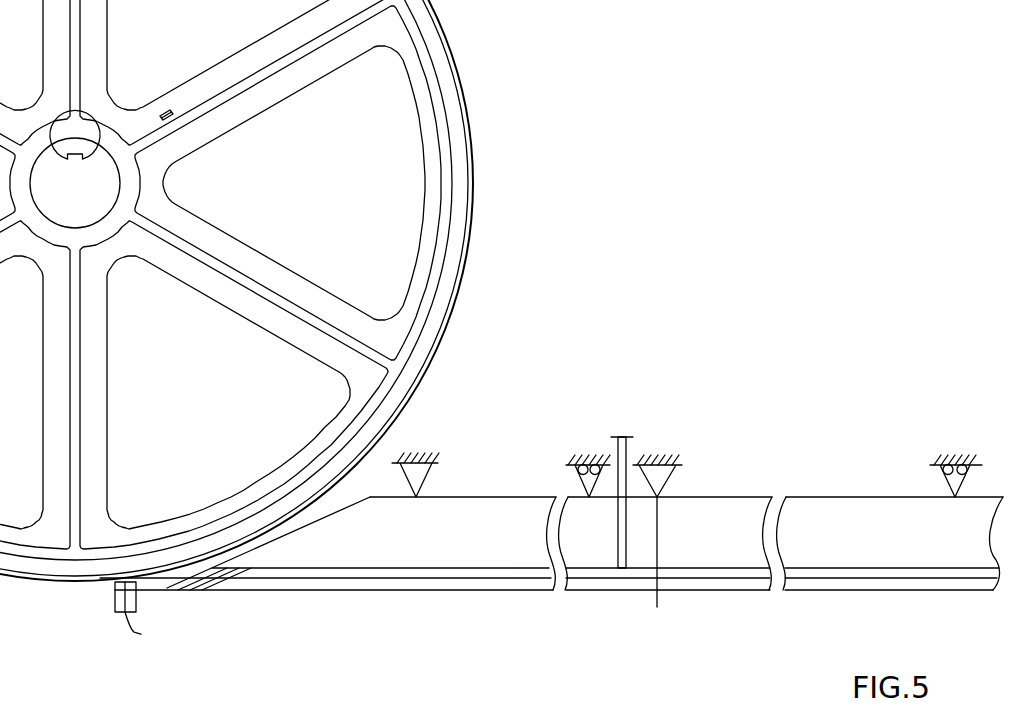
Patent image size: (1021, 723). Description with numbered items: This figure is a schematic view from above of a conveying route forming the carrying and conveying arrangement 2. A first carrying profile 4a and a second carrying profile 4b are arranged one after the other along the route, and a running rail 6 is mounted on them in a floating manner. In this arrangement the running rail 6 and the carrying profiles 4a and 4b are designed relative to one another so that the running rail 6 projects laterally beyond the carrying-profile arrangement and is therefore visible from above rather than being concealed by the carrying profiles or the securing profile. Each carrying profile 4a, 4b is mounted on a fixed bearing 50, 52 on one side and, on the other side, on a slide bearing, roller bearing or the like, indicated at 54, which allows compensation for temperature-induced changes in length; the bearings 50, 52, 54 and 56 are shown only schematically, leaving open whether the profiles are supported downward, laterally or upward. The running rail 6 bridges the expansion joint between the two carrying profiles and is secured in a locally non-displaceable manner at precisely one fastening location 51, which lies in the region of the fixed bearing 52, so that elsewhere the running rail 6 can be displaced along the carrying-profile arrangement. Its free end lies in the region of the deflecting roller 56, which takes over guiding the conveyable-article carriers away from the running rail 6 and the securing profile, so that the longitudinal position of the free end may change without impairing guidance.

The carrying and conveying arrangement 2 is at (812, 433).
The first carrying profile 4a is at (475, 515).
The second carrying profile 4b is at (720, 513).
The running rail 6 is at (417, 583).
The fixed bearing 50 is at (427, 461).
The fastening location 51 is at (658, 597).
The fixed bearing 52 is at (659, 478).
The bearing allowing length compensation 54 is at (591, 470).
The deflecting roller 56 is at (447, 283).